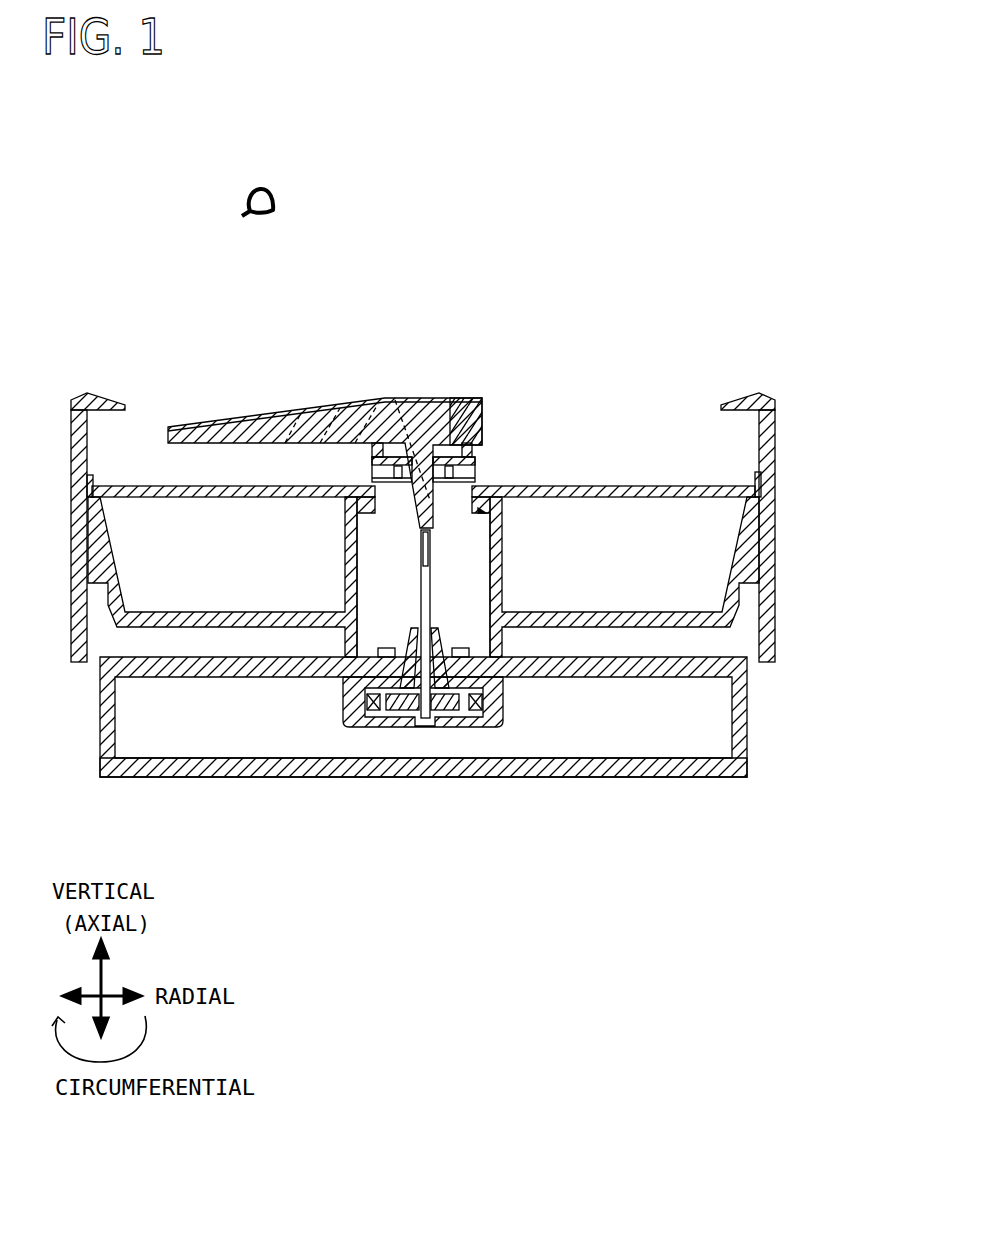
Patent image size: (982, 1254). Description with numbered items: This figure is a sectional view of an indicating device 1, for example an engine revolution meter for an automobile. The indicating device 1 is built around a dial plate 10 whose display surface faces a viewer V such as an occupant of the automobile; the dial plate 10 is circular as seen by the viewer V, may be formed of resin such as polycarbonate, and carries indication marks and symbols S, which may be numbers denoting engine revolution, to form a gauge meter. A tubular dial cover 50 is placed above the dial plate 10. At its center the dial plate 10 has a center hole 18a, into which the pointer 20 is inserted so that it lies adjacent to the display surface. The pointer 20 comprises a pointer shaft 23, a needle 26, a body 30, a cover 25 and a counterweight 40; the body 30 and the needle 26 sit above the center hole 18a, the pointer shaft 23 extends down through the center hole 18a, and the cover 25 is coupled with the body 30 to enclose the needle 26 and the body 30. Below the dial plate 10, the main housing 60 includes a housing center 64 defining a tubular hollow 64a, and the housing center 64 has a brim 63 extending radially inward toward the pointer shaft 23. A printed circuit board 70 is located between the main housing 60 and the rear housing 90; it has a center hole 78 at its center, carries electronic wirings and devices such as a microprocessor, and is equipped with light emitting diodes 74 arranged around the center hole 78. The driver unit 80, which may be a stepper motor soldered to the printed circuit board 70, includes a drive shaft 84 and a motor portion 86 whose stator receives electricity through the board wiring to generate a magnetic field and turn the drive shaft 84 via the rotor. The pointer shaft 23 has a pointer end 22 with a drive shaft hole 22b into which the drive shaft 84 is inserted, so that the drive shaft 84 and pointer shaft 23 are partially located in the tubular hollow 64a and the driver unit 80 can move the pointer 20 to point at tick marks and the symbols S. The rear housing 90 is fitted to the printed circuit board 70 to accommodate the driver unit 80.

The indicating device 1 is at (806, 314).
The dial plate 10 is at (469, 607).
The center hole 18a is at (478, 483).
The pointer 20 is at (363, 431).
The pointer end 22 is at (439, 666).
The drive shaft hole 22b is at (432, 548).
The pointer shaft 23 is at (373, 465).
The cover 25 is at (420, 400).
The needle 26 is at (308, 412).
The body 30 is at (445, 400).
The counterweight 40 is at (478, 426).
The dial cover 50 is at (780, 410).
The main housing 60 is at (768, 680).
The brim 63 is at (492, 509).
The housing center 64 is at (423, 577).
The tubular hollow 64a is at (375, 601).
The printed circuit board 70 is at (722, 686).
The light emitting diodes 74 is at (380, 652).
The center hole 78 is at (458, 688).
The driver unit 80 is at (496, 735).
The drive shaft 84 is at (373, 712).
The motor portion 86 is at (445, 702).
The rear housing 90 is at (727, 788).
The symbols S is at (127, 477).
The viewer V is at (268, 196).